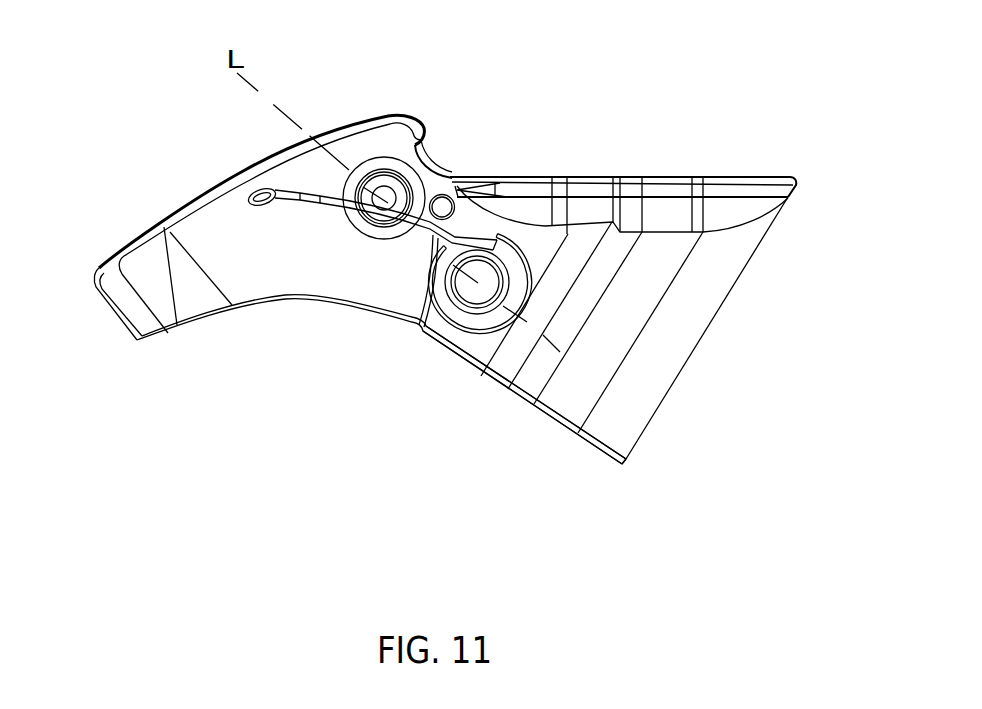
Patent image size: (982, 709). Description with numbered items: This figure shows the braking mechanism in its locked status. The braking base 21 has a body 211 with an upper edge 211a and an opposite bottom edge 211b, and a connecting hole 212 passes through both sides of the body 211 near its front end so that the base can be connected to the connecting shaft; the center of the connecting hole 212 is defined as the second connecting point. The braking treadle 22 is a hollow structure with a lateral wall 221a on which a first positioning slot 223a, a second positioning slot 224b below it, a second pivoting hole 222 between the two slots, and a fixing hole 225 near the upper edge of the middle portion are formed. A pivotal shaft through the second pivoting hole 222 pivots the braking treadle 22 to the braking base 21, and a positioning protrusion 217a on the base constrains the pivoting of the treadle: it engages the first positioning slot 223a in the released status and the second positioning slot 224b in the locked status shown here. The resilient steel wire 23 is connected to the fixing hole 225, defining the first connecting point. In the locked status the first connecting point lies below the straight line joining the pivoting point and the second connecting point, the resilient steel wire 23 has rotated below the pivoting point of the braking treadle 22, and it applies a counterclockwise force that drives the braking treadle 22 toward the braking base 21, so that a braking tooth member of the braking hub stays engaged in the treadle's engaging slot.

The braking base 21 is at (621, 276).
The body 211 is at (620, 339).
The upper edge 211a is at (637, 176).
The bottom edge 211b is at (560, 426).
The connecting hole 212 is at (473, 294).
The positioning protrusion 217a is at (444, 205).
The braking treadle 22 is at (348, 248).
The lateral wall 221a is at (247, 257).
The second pivoting hole 222 is at (378, 224).
The first positioning slot 223a is at (407, 144).
The second positioning slot 224b is at (442, 205).
The fixing hole 225 is at (254, 194).
The resilient steel wire 23 is at (320, 199).